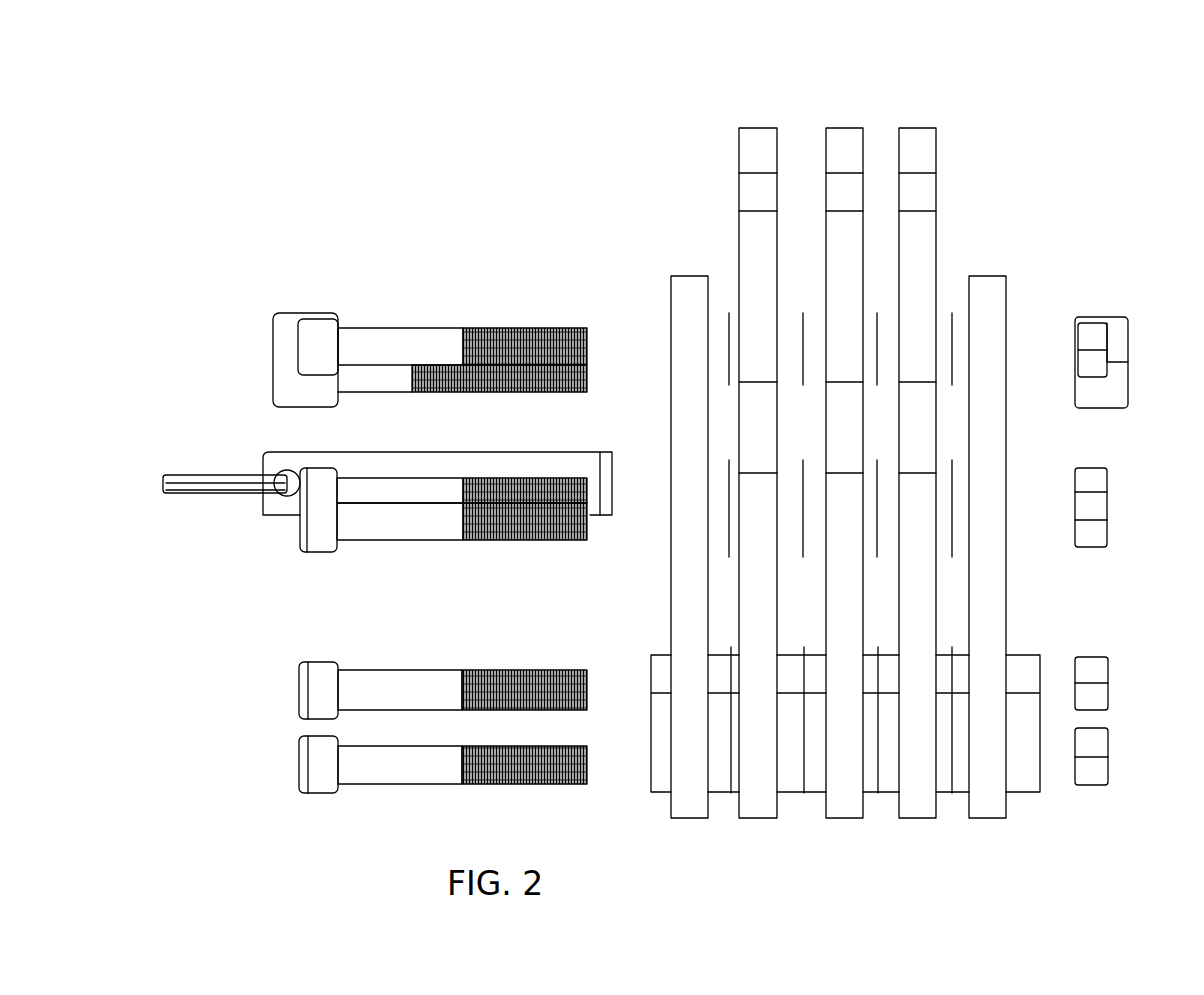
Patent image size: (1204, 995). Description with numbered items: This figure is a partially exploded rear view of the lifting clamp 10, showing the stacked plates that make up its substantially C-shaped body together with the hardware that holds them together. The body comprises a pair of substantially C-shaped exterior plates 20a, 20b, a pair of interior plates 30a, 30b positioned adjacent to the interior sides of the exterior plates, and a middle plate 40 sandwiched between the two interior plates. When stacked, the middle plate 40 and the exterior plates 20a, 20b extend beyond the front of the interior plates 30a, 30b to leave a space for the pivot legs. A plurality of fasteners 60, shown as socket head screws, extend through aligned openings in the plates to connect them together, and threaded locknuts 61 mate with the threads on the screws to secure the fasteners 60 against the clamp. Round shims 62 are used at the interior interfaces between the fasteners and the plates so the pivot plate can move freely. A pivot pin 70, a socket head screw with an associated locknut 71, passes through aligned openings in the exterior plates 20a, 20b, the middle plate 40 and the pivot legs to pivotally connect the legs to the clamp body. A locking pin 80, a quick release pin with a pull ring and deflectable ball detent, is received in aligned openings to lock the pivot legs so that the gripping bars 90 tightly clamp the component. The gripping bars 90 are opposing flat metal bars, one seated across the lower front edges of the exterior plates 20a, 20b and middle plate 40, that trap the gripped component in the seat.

The lifting clamp 10 is at (568, 202).
The exterior plate 20a is at (683, 273).
The exterior plate 20b is at (980, 273).
The interior plate 30a is at (768, 135).
The interior plate 30b is at (920, 142).
The middle plate 40 is at (845, 821).
The fastener 60 is at (433, 350).
The threaded locknut 61 is at (1092, 335).
The round shim 62 is at (733, 458).
The pivot pin 70 is at (280, 328).
The locknut 71 is at (1131, 337).
The locking pin 80 is at (261, 450).
The gripping bar 90 is at (649, 732).